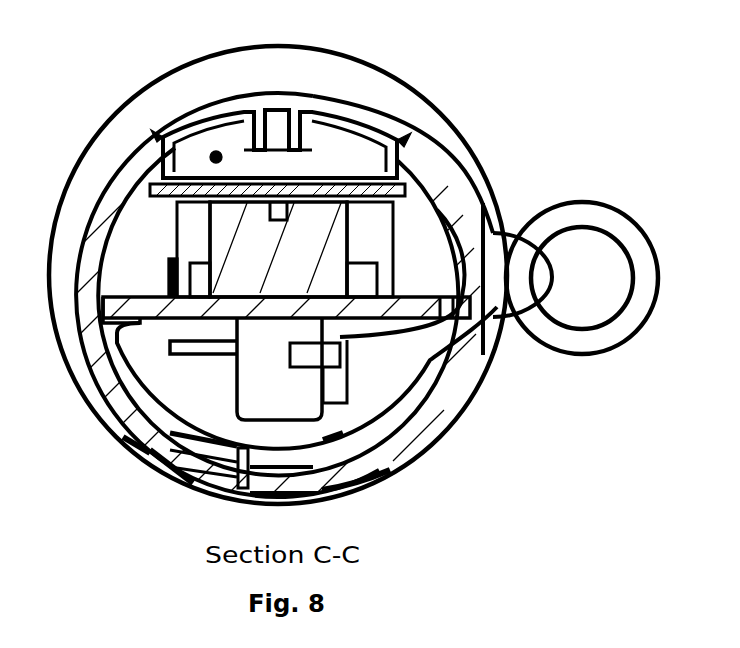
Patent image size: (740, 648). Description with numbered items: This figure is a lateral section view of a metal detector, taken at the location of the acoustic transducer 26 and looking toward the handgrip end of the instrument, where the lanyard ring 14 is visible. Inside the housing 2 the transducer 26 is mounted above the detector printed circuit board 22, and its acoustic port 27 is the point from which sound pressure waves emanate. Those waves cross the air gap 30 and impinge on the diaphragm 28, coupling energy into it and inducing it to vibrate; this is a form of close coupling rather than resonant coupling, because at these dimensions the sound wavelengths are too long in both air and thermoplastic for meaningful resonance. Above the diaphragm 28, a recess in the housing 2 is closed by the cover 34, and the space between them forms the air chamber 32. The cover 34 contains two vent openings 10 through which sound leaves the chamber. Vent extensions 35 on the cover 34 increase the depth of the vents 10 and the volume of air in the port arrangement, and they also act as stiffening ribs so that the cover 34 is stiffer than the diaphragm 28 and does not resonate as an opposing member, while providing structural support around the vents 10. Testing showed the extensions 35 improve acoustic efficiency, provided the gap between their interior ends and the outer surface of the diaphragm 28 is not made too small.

The housing 2 is at (390, 420).
The vent openings 10 is at (254, 104).
The lanyard ring 14 is at (570, 356).
The detector printed circuit board 22 is at (160, 322).
The acoustic transducer 26 is at (207, 255).
The acoustic port 27 is at (275, 212).
The diaphragm 28 is at (157, 135).
The air gap 30 is at (195, 199).
The air chamber 32 is at (216, 150).
The cover 34 is at (337, 117).
The vent extensions 35 is at (387, 140).